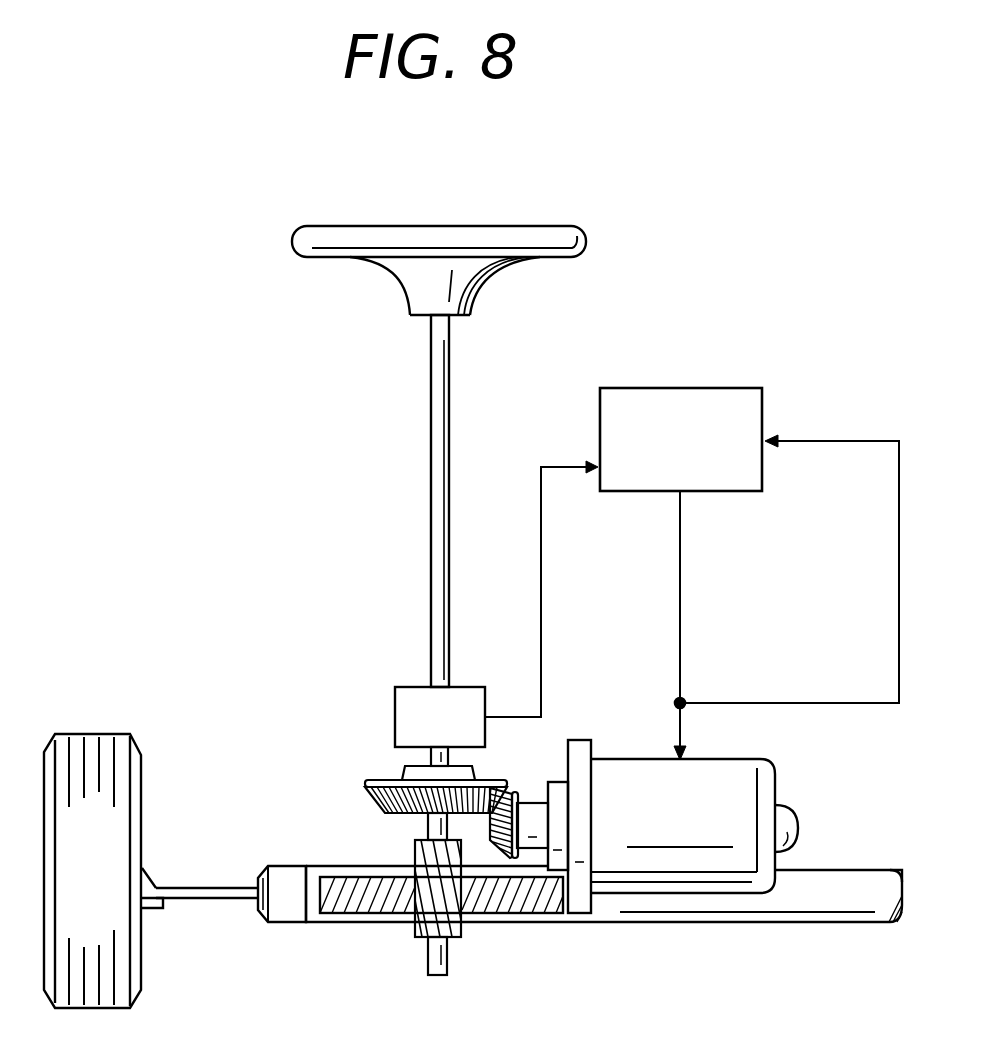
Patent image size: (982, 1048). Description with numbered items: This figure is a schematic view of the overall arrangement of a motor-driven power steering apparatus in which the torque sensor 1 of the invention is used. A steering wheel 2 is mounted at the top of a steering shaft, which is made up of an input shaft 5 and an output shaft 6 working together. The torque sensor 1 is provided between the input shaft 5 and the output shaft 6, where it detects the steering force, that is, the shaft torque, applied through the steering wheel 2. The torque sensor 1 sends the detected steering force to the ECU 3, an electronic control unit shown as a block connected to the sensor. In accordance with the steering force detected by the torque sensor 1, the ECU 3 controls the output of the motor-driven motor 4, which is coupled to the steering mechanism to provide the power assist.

The torque sensor 1 is at (410, 712).
The steering wheel 2 is at (488, 233).
The ECU 3 is at (733, 388).
The motor-driven motor 4 is at (750, 780).
The input shaft 5 is at (437, 525).
The output shaft 6 is at (430, 757).